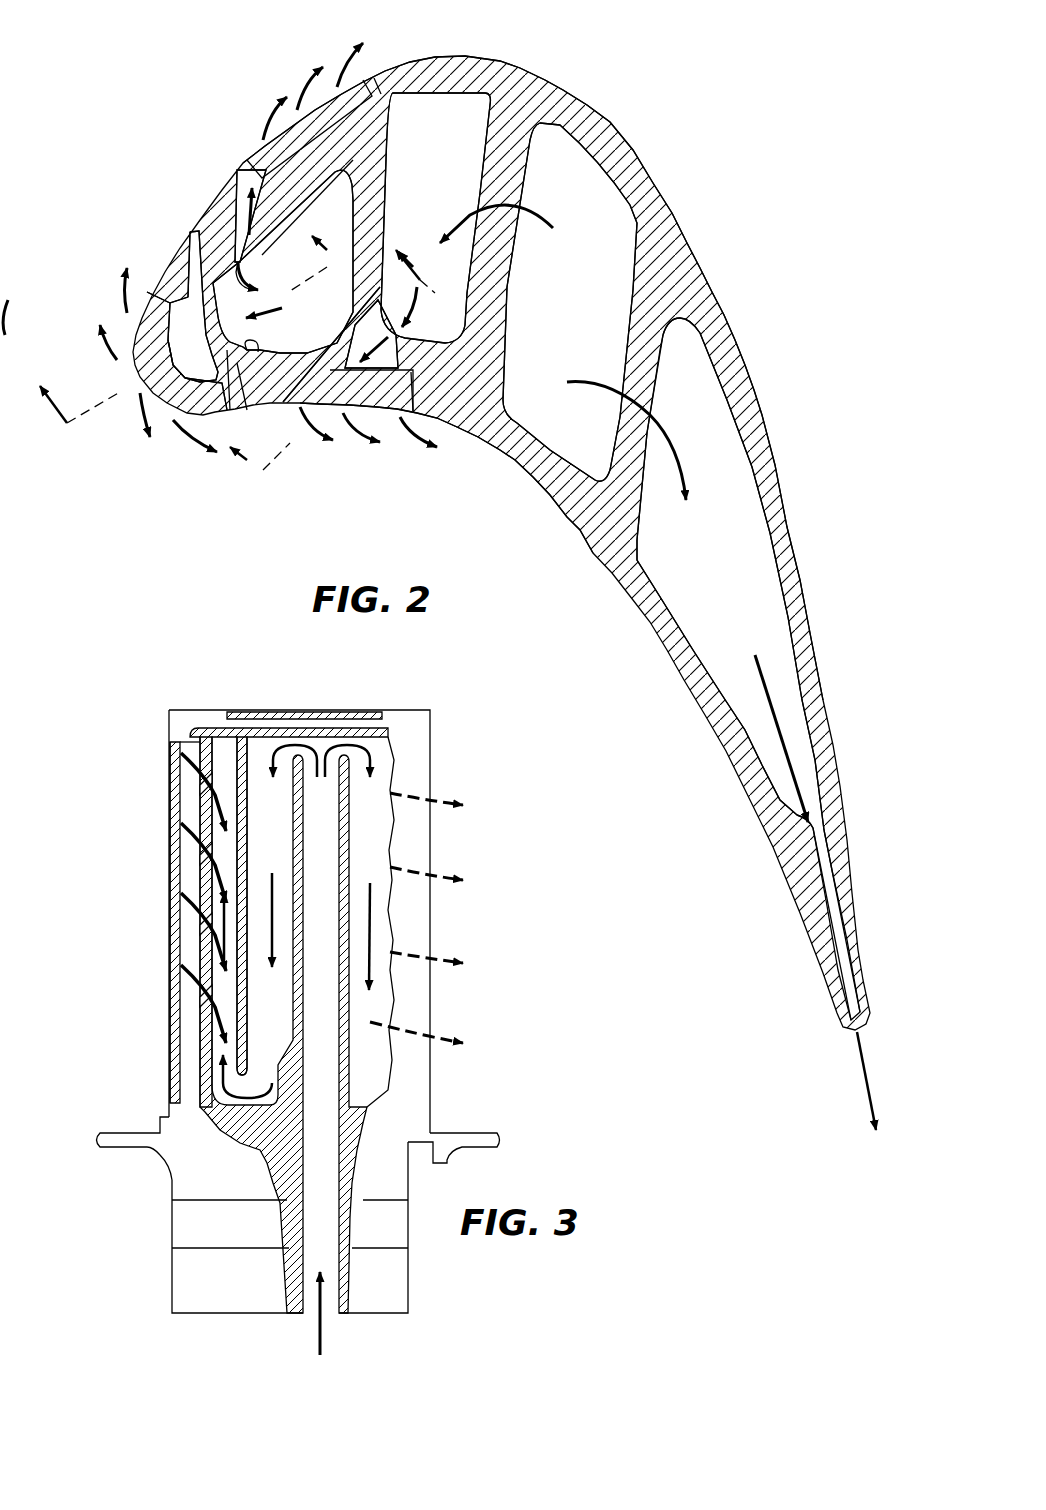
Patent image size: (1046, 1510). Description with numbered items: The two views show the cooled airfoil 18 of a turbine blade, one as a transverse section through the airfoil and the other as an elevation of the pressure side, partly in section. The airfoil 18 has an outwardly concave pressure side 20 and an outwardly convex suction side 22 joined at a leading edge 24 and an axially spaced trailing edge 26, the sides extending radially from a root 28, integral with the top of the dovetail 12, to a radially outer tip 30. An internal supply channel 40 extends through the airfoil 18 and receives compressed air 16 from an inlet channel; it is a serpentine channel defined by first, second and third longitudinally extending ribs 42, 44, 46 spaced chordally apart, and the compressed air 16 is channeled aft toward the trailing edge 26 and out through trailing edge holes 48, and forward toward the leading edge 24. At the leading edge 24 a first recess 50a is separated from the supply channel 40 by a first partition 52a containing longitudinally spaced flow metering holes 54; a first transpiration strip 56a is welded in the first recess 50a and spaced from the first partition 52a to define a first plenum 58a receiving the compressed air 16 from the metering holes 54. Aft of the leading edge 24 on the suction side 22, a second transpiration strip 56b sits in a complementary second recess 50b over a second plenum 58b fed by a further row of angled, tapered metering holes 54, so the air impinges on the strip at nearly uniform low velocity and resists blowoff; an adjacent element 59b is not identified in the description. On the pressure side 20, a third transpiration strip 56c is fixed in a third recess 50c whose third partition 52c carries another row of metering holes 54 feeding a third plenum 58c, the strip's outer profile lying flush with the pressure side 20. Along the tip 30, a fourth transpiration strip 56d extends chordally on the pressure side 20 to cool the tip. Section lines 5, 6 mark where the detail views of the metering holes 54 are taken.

In FIG. 2, the section line 5- 5 is at (177, 329).
In FIG. 2, the section line 6- 6 is at (326, 364).
In FIG. 3, the dovetail 12 is at (408, 1293).
In FIG. 3, the compressed air 16 is at (320, 1338).
In FIG. 2, the airfoil 18 is at (796, 531).
In FIG. 2, the pressure side 20 is at (590, 551).
In FIG. 3, the pressure side 20 is at (398, 1003).
In FIG. 2, the suction side 22 is at (610, 120).
In FIG. 2, the leading edge 24 is at (123, 405).
In FIG. 3, the leading edge 24 is at (168, 797).
In FIG. 2, the trailing edge 26 is at (866, 1012).
In FIG. 3, the trailing edge 26 is at (430, 843).
In FIG. 3, the root 28 is at (433, 1127).
In FIG. 3, the tip 30 is at (398, 710).
In FIG. 2, the supply channel 40 is at (476, 382).
In FIG. 3, the supply channel 40 is at (313, 1111).
In FIG. 2, the first rib 42 is at (392, 167).
In FIG. 3, the first rib 42 is at (248, 800).
In FIG. 2, the second rib 44 is at (507, 292).
In FIG. 3, the second rib 44 is at (293, 853).
In FIG. 2, the third rib 46 is at (657, 397).
In FIG. 3, the third rib 46 is at (350, 843).
In FIG. 2, the trailing edge holes 48 is at (845, 1030).
In FIG. 2, the first recess 50a is at (248, 355).
In FIG. 2, the second recess 50b is at (380, 73).
In FIG. 2, the third recess 50c is at (417, 397).
In FIG. 2, the first partition 52a is at (263, 356).
In FIG. 3, the first partition 52a is at (222, 740).
In FIG. 2, the third partition 52c is at (410, 360).
In FIG. 2, the flow metering holes 54 is at (250, 175).
In FIG. 3, the flow metering holes 54 is at (207, 923).
In FIG. 2, the first transpiration strip 56a is at (135, 330).
In FIG. 3, the first transpiration strip 56a is at (167, 1083).
In FIG. 2, the second transpiration strip 56b is at (327, 93).
In FIG. 2, the third transpiration strip 56c is at (372, 415).
In FIG. 3, the fourth transpiration strip 56d is at (294, 712).
In FIG. 2, the first plenum 58a is at (180, 365).
In FIG. 3, the first plenum 58a is at (190, 867).
In FIG. 2, the second plenum 58b is at (250, 173).
In FIG. 2, the third plenum 58c is at (350, 322).
In FIG. 2, the separator rib 59b is at (320, 183).